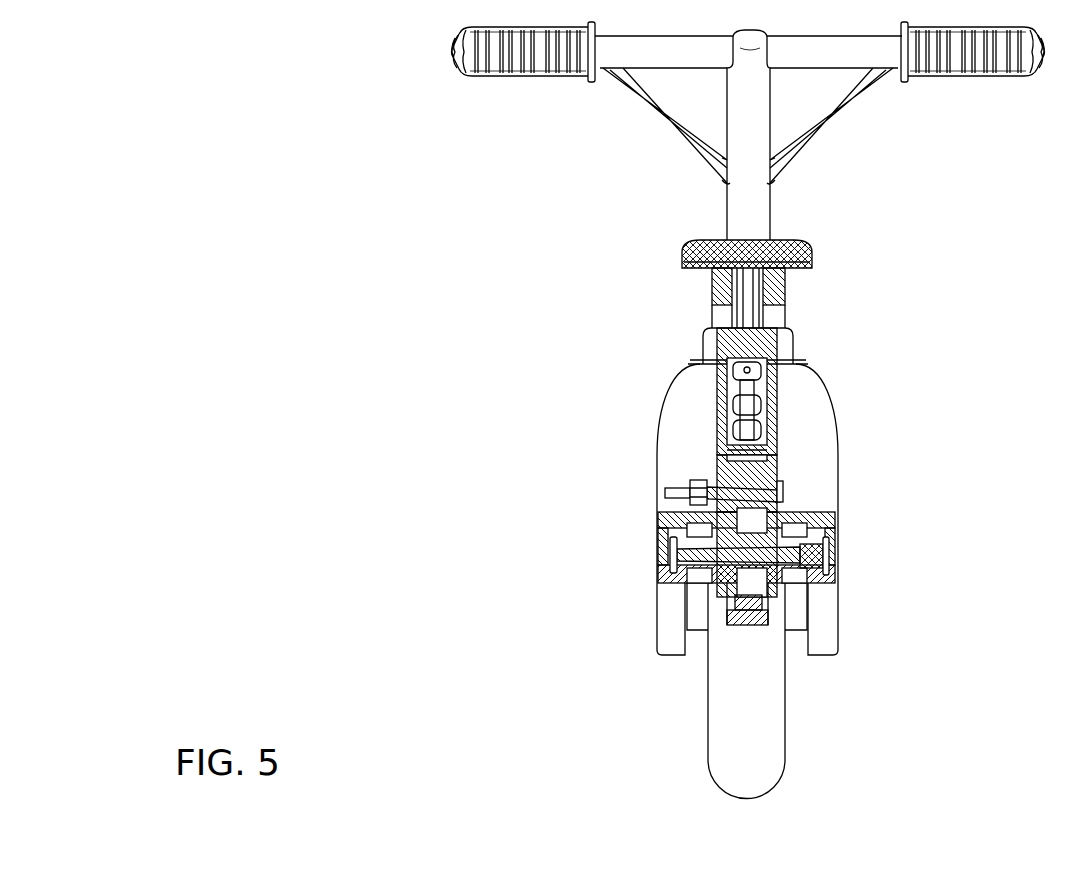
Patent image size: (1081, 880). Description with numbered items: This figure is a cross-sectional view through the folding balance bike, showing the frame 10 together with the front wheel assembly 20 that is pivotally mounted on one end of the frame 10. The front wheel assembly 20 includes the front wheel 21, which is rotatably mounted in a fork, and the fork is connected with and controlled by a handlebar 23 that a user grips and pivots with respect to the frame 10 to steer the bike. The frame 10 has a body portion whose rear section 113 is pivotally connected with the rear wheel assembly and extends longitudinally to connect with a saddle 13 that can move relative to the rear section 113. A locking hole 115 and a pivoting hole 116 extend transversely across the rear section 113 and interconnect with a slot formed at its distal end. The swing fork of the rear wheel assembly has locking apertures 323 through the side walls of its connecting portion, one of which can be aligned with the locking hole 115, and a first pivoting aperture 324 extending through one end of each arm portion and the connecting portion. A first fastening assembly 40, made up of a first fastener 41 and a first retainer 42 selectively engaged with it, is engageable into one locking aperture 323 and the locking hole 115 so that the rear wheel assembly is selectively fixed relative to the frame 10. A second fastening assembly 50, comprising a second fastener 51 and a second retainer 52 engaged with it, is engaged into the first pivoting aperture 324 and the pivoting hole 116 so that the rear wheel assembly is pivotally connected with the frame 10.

The frame 10 is at (642, 377).
The saddle 13 is at (690, 245).
The front wheel assembly 20 is at (618, 167).
The front wheel 21 is at (772, 733).
The handlebar 23 is at (597, 62).
The first fastening assembly 40 is at (658, 518).
The first fastener 41 is at (785, 465).
The first retainer 42 is at (658, 502).
The second fastening assembly 50 is at (852, 561).
The second fastener 51 is at (824, 550).
The second retainer 52 is at (672, 548).
The rear section 113 is at (777, 452).
The locking hole 115 is at (690, 481).
The pivoting hole 116 is at (675, 565).
The locking aperture 323 is at (783, 494).
The first pivoting aperture 324 is at (790, 582).